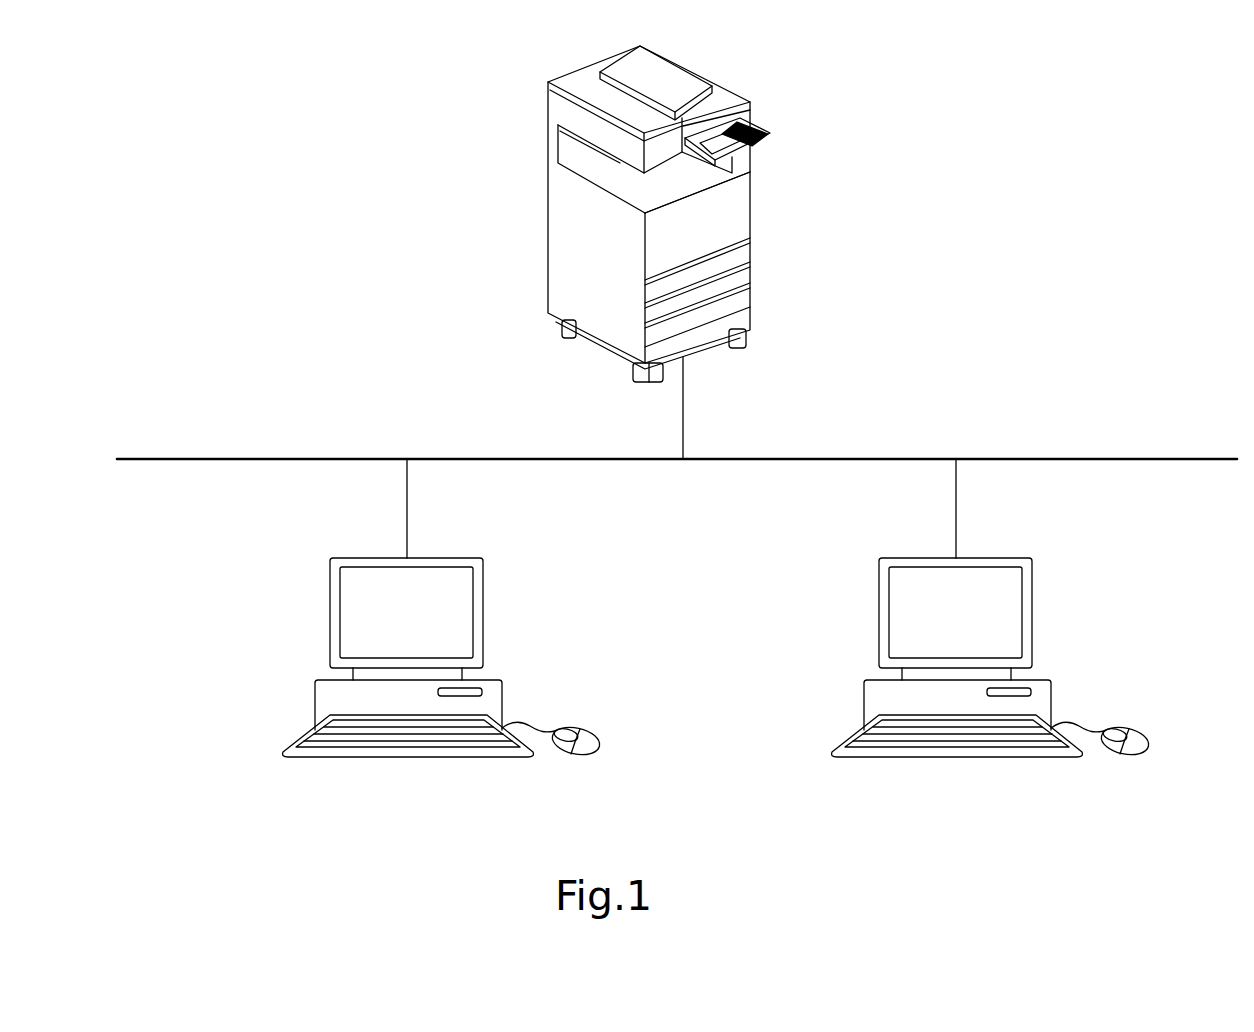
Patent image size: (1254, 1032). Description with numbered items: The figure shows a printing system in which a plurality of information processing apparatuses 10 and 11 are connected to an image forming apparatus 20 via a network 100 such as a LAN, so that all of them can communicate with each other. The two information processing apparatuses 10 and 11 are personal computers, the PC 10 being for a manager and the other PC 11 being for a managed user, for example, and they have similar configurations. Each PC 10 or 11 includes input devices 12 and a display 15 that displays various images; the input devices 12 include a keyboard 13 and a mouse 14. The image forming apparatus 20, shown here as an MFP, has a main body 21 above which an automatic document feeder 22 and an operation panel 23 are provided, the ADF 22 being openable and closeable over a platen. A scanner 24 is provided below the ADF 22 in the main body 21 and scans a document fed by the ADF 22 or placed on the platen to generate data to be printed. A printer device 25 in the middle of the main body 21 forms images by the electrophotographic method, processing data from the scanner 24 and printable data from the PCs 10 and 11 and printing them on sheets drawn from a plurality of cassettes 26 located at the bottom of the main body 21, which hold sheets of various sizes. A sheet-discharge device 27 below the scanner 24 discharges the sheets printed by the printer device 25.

The network 100 is at (1032, 458).
The image forming apparatus 20 is at (694, 205).
The main body 21 is at (548, 266).
The automatic document feeder (ADF) 22 is at (578, 82).
The operation panel 23 is at (766, 125).
The scanner 24 is at (622, 132).
The printer device 25 is at (720, 212).
The cassettes 26 is at (725, 264).
The sheet-discharge device 27 is at (615, 172).
The information processing apparatus 10 is at (443, 677).
The information processing apparatus 11 is at (1006, 618).
The input devices 12 is at (488, 759).
The keyboard 13 is at (400, 750).
The mouse 14 is at (569, 733).
The display 15 is at (457, 618).